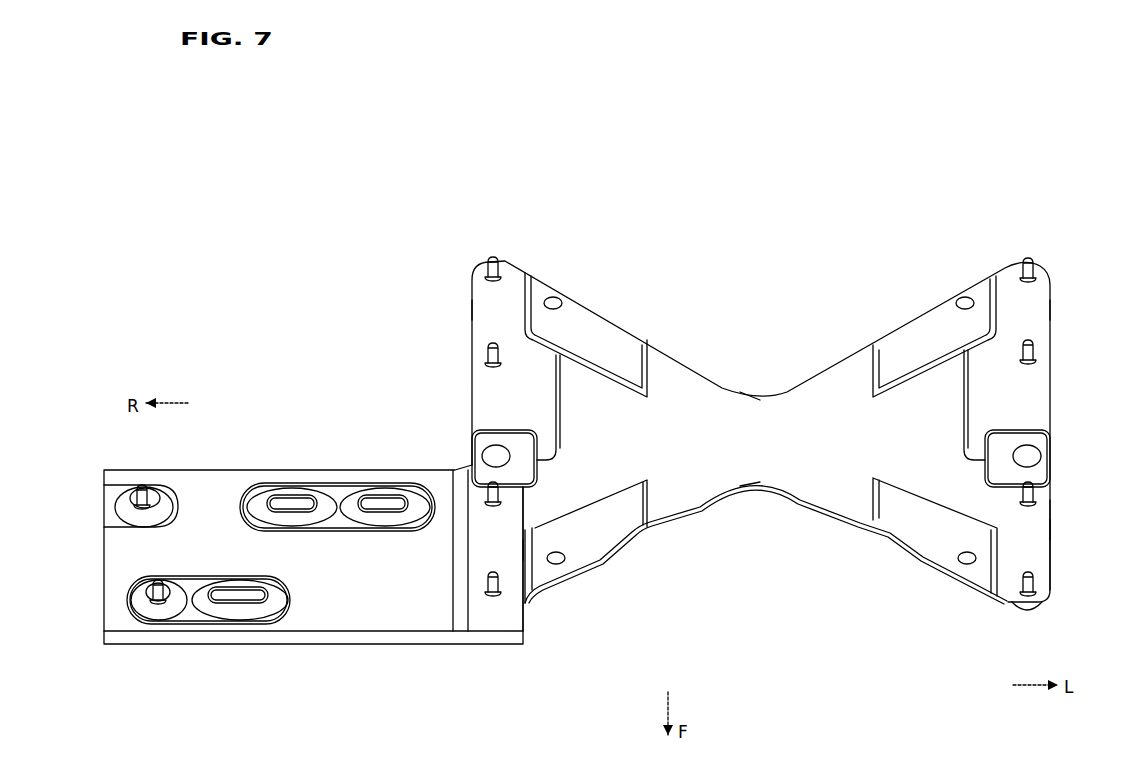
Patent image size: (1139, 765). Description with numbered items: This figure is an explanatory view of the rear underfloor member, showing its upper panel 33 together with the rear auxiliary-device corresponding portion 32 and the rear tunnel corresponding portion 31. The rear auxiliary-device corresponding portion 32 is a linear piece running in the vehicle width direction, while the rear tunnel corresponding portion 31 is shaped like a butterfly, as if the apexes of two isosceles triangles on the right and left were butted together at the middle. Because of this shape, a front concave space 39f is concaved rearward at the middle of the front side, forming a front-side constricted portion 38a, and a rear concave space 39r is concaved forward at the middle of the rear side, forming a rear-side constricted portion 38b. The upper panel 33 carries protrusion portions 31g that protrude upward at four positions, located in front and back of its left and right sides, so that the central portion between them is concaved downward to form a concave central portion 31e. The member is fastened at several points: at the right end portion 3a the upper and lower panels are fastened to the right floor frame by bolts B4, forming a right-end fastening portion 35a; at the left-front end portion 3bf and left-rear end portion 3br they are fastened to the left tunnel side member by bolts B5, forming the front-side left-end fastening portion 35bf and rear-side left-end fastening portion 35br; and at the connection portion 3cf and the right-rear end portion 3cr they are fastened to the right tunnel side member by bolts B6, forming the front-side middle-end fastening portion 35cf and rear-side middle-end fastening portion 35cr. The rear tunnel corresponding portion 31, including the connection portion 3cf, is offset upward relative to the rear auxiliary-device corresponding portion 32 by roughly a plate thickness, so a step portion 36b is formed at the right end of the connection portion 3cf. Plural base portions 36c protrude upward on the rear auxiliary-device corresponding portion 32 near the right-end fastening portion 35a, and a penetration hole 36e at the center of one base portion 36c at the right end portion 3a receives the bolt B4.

The upper panel 33 is at (918, 178).
The rear tunnel corresponding portion 31 is at (850, 362).
The concave central portion 31e is at (780, 472).
The protrusion portions 31g is at (598, 330).
The rear auxiliary-device corresponding portion 32 is at (242, 468).
The right end portion 3a is at (115, 560).
The right-rear end portion 3cr is at (480, 297).
The connection portion 3cf is at (470, 546).
The left-rear end portion 3br is at (1043, 298).
The left-front end portion 3bf is at (1040, 545).
The right-end fastening portion 35a is at (125, 488).
The rear-side middle-end fastening portion 35cr is at (480, 269).
The front-side middle-end fastening portion 35cf is at (476, 490).
The rear-side left-end fastening portion 35br is at (1045, 280).
The front-side left-end fastening portion 35bf is at (1043, 510).
The step portion 36b is at (462, 583).
The base portions 36c is at (318, 490).
The penetration hole 36e is at (168, 500).
The front-side constricted portion 38a is at (723, 505).
The rear-side constricted portion 38b is at (723, 383).
The rear concave space 39r is at (710, 298).
The front concave space 39f is at (717, 555).
The bolts B4 is at (145, 487).
The bolts B5 is at (1027, 257).
The bolts B6 is at (493, 256).